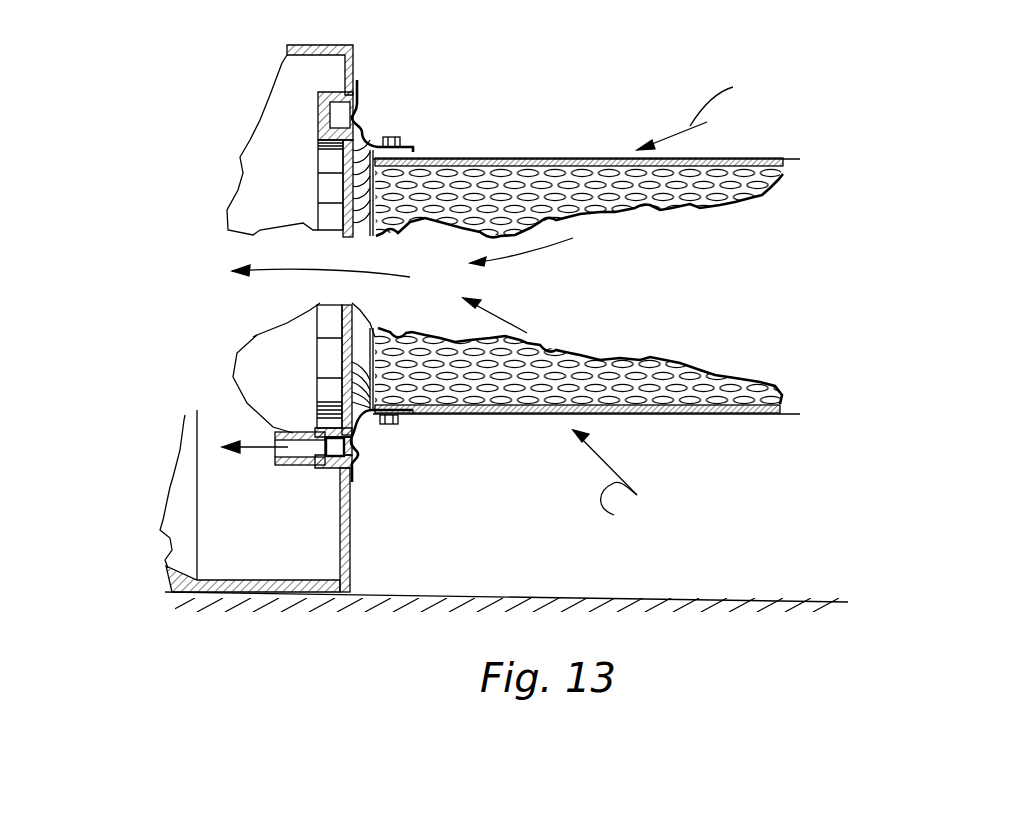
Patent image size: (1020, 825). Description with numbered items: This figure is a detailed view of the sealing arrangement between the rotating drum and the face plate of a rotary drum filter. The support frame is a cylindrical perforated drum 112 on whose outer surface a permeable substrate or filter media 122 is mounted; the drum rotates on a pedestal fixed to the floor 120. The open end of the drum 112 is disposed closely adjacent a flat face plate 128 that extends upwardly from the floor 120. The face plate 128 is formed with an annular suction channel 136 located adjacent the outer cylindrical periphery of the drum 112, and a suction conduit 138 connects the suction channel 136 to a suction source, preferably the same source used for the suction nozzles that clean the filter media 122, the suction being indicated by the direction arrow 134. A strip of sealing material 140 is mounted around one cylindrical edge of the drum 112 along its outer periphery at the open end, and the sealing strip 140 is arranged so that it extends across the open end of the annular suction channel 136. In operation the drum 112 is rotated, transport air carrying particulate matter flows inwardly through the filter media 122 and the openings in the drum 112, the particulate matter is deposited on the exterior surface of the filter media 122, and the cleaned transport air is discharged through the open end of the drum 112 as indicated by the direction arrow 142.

The cylindrical perforated drum 112 is at (547, 120).
The floor 120 is at (537, 596).
The filter media 122 is at (617, 158).
The face plate 128 is at (353, 48).
The direction arrow 134 is at (313, 437).
The annular suction channel 136 is at (253, 440).
The suction conduit 138 is at (290, 463).
The sealing strip 140 is at (358, 110).
The direction arrow 142 is at (675, 306).